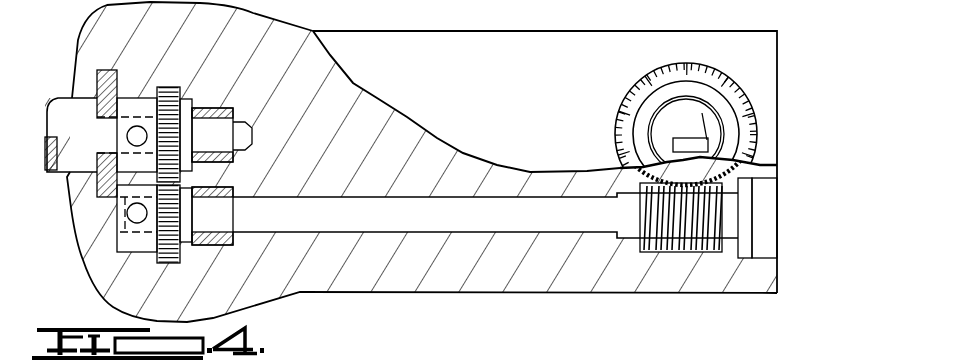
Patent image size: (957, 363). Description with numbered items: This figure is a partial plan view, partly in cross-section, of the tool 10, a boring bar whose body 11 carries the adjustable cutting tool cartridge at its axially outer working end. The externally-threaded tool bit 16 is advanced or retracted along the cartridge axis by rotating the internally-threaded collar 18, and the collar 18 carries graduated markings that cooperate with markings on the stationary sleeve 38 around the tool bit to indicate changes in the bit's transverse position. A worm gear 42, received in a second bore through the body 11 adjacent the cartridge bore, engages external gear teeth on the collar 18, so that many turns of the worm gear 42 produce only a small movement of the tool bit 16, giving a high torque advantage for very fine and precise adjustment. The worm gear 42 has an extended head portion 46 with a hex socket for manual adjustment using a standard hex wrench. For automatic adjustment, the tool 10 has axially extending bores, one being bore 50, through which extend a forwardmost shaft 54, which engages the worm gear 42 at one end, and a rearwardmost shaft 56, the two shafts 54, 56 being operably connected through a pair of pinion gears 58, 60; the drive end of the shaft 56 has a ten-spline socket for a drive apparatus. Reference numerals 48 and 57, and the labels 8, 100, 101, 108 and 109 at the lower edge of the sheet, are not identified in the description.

The tool 10 is at (803, 60).
The body 11 is at (696, 43).
The tool bit 16 is at (672, 124).
The collar 18 is at (641, 127).
The stationary sleeve 38 is at (752, 111).
The worm gear 42 is at (683, 246).
The extended head portion 46 is at (747, 203).
The end cap 48 is at (776, 266).
The axially extending bore 50 is at (417, 225).
The shaft 54 is at (334, 207).
The shaft 56 is at (58, 108).
The bracket 57 is at (80, 107).
The pinion gear 58 is at (162, 260).
The pinion gear 60 is at (173, 88).
The section line indicator (adjacent figure) 8 is at (800, 341).
The adjacent figure element 100 is at (855, 360).
The adjacent figure element 101 is at (735, 355).
The adjacent figure element 108 is at (438, 350).
The adjacent figure element 109 is at (542, 355).